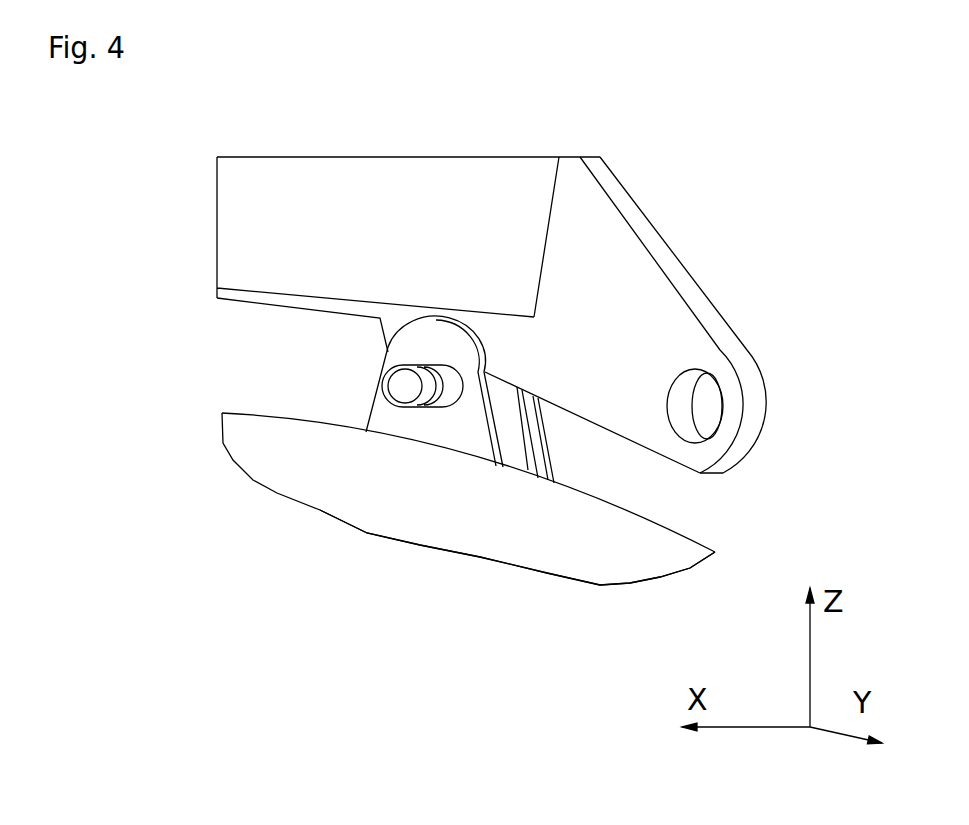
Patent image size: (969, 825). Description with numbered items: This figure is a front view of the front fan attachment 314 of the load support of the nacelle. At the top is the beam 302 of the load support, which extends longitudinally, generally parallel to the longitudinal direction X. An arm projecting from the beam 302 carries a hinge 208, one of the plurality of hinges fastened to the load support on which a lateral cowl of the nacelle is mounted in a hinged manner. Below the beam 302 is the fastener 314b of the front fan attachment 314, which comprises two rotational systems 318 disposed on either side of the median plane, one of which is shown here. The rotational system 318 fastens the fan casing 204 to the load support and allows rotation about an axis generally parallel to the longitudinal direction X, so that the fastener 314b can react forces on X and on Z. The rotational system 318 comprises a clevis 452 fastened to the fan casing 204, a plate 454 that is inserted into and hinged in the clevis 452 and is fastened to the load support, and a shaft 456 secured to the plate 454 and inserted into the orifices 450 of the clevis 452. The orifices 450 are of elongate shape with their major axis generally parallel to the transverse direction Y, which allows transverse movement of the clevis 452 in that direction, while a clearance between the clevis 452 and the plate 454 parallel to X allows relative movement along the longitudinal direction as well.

The beam 302 is at (480, 193).
The rotational system 318 is at (227, 342).
The hinge 208 is at (707, 413).
The clevis 452 is at (407, 352).
The plate 454 is at (503, 405).
The orifice 450 is at (448, 400).
The shaft 456 is at (413, 390).
The front fan attachment 314 is at (325, 593).
The fastener 314b is at (442, 637).
The fan casing 204 is at (658, 558).